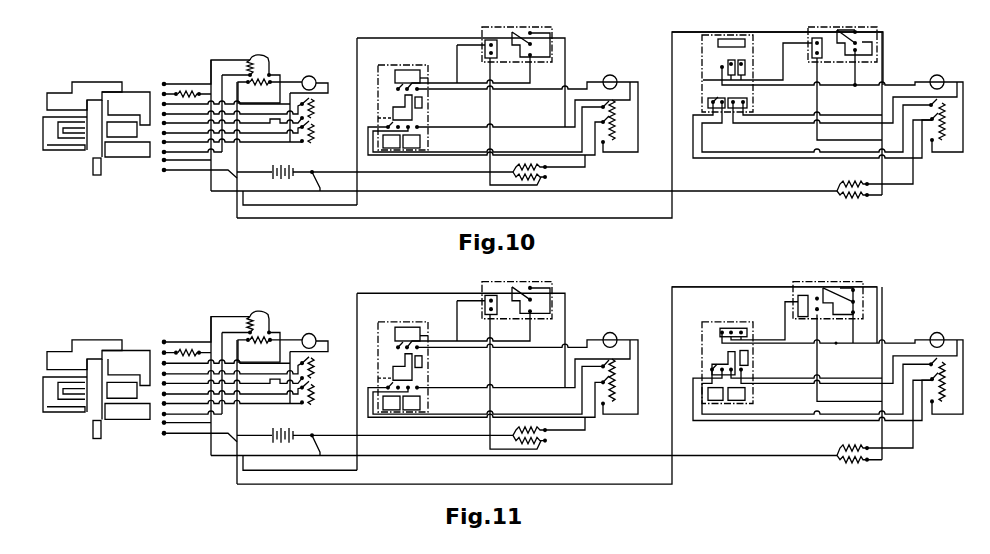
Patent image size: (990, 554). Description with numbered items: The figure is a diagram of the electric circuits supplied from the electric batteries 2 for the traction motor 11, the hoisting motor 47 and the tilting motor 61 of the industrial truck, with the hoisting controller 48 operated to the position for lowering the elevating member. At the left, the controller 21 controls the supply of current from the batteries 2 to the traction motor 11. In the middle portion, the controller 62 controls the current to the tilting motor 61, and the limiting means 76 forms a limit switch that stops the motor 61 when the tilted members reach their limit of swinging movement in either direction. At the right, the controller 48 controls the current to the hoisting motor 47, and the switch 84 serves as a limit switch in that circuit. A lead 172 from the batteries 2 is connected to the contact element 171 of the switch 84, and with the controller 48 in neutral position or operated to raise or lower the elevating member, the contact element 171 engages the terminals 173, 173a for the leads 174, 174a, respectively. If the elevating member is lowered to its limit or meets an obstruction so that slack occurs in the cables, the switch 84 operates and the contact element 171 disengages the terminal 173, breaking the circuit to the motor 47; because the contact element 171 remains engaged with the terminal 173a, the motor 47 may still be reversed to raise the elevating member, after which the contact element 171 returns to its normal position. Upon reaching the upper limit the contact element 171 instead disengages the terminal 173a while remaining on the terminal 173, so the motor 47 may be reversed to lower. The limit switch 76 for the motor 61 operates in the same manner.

In FIG. 10, the controller 21 is at (91, 82).
In FIG. 11, the controller 21 is at (96, 378).
In FIG. 10, the motor 11 is at (311, 76).
In FIG. 11, the motor 11 is at (275, 357).
In FIG. 10, the electric batteries 2 is at (294, 167).
In FIG. 11, the electric batteries 2 is at (276, 426).
In FIG. 10, the controller 62 is at (388, 65).
In FIG. 11, the controller 62 is at (403, 356).
In FIG. 10, the limiting means 76 is at (508, 27).
In FIG. 11, the limiting means 76 is at (517, 290).
In FIG. 10, the motor 61 is at (622, 70).
In FIG. 11, the motor 61 is at (620, 364).
In FIG. 10, the controller 48 is at (702, 50).
In FIG. 11, the controller 48 is at (737, 353).
In FIG. 10, the lead 172 is at (790, 32).
In FIG. 11, the lead 172 is at (774, 282).
In FIG. 10, the switch 84 is at (820, 27).
In FIG. 11, the switch 84 is at (855, 285).
In FIG. 10, the contact element 171 is at (872, 41).
In FIG. 11, the contact element 171 is at (843, 283).
In FIG. 10, the terminal 173 is at (858, 30).
In FIG. 11, the terminal 173 is at (853, 284).
In FIG. 10, the lead 174 is at (874, 36).
In FIG. 11, the lead 174 is at (881, 289).
In FIG. 10, the terminal 173a is at (862, 55).
In FIG. 11, the terminal 173a is at (884, 306).
In FIG. 10, the lead 174a is at (855, 86).
In FIG. 11, the lead 174a is at (842, 353).
In FIG. 10, the electric motor 47 is at (932, 76).
In FIG. 11, the electric motor 47 is at (946, 364).